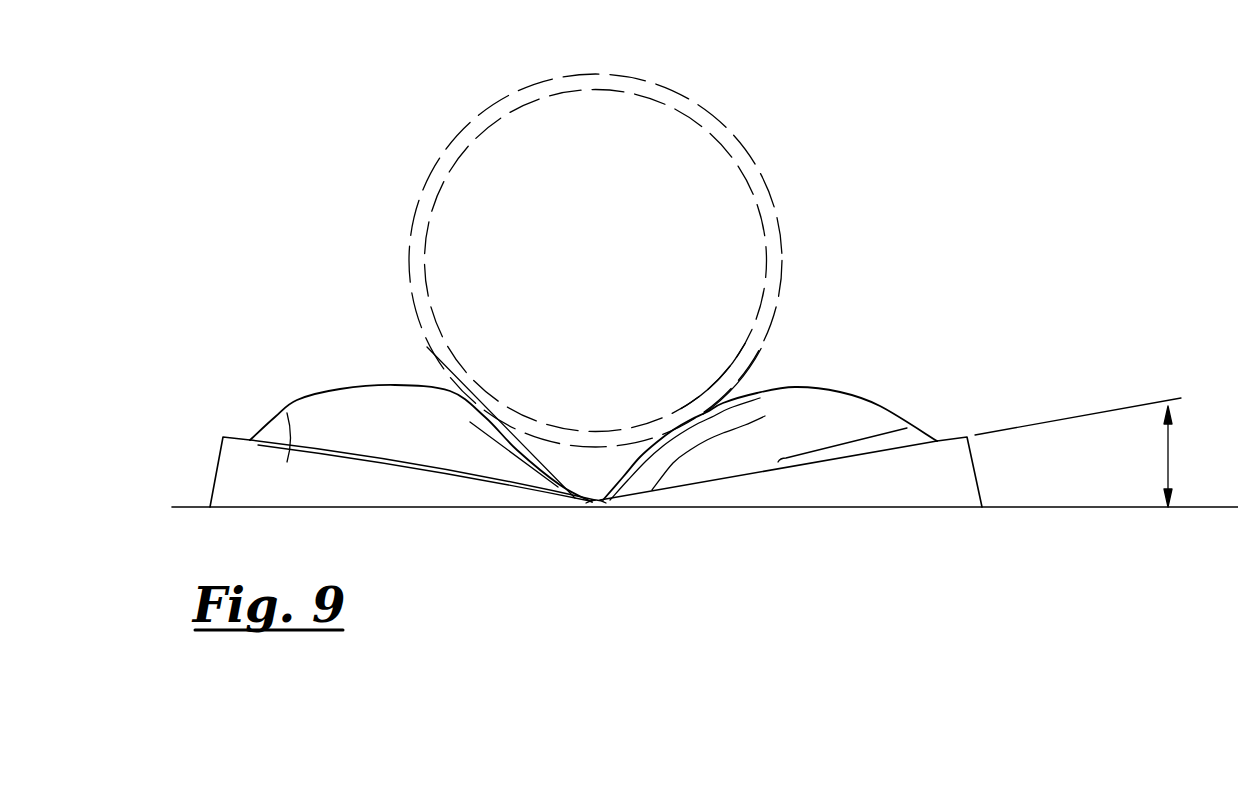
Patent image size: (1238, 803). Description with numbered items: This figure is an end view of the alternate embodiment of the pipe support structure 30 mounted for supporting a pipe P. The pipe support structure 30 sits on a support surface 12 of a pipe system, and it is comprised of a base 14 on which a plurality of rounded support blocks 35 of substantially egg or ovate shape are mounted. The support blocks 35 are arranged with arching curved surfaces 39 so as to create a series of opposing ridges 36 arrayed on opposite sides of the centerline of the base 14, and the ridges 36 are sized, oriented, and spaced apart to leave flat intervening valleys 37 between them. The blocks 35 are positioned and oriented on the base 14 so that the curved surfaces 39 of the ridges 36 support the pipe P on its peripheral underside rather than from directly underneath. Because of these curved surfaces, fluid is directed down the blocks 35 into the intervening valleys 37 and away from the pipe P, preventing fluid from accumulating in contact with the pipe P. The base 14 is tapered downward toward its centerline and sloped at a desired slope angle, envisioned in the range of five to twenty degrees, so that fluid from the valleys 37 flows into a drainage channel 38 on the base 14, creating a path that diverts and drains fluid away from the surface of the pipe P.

The support surface 12 is at (1097, 507).
The base 14 is at (288, 417).
The pipe support structure 30 is at (995, 235).
The support blocks 35 is at (387, 405).
The ridges 36 is at (810, 450).
The intervening valleys 37 is at (378, 452).
The drainage channel 38 is at (593, 482).
The curved surfaces 39 is at (830, 407).
The pipe P is at (736, 140).